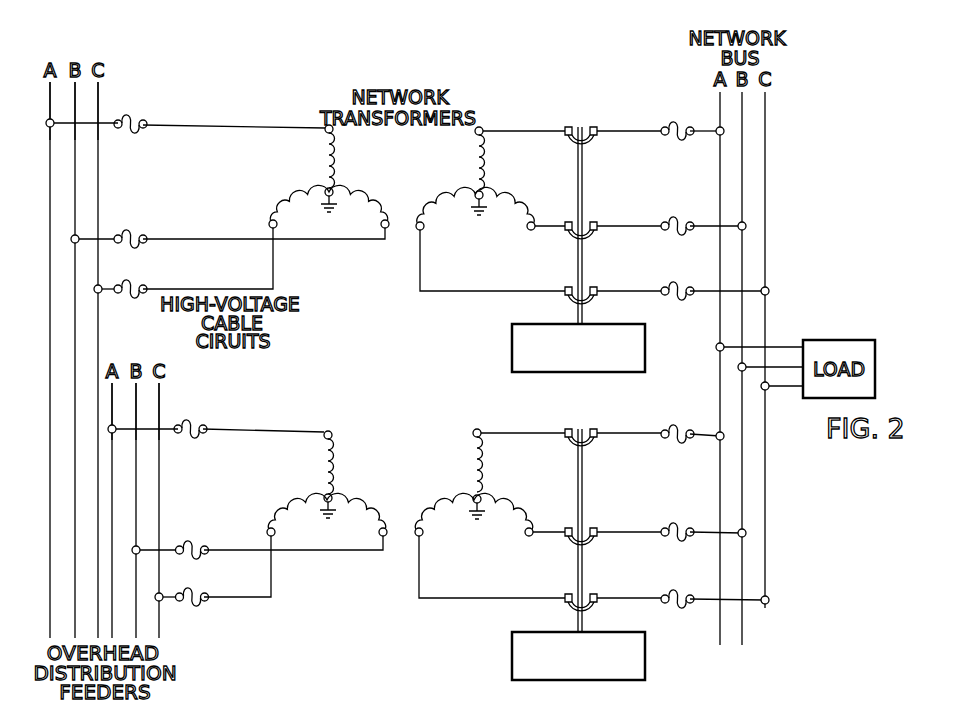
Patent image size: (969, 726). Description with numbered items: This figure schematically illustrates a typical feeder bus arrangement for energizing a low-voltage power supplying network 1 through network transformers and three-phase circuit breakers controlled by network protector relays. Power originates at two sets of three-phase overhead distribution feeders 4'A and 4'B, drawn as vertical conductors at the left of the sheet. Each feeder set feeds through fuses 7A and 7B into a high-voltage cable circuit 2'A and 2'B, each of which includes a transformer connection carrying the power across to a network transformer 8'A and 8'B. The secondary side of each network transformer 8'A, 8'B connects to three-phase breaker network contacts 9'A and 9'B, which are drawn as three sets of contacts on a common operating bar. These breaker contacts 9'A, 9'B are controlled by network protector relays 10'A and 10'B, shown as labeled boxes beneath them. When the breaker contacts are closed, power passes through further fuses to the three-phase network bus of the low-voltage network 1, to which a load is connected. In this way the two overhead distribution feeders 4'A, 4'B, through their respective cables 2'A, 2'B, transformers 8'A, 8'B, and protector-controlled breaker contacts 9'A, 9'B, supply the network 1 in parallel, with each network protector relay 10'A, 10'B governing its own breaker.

The low-voltage power supplying network 1 is at (716, 653).
The overhead distribution feeder 4'A is at (102, 99).
The overhead distribution feeder 4'B is at (164, 399).
The fuses 7A is at (137, 115).
The fuses 7B is at (199, 422).
The high-voltage cable 2'A is at (217, 208).
The high-voltage cable 2'B is at (247, 515).
The transformer 8'A is at (474, 209).
The transformer 8'B is at (475, 507).
The three-phase breaker network contacts 9'A is at (601, 225).
The three-phase breaker network contacts 9'B is at (596, 530).
The network protector relay 10'A is at (546, 338).
The network protector relay 10'B is at (546, 646).